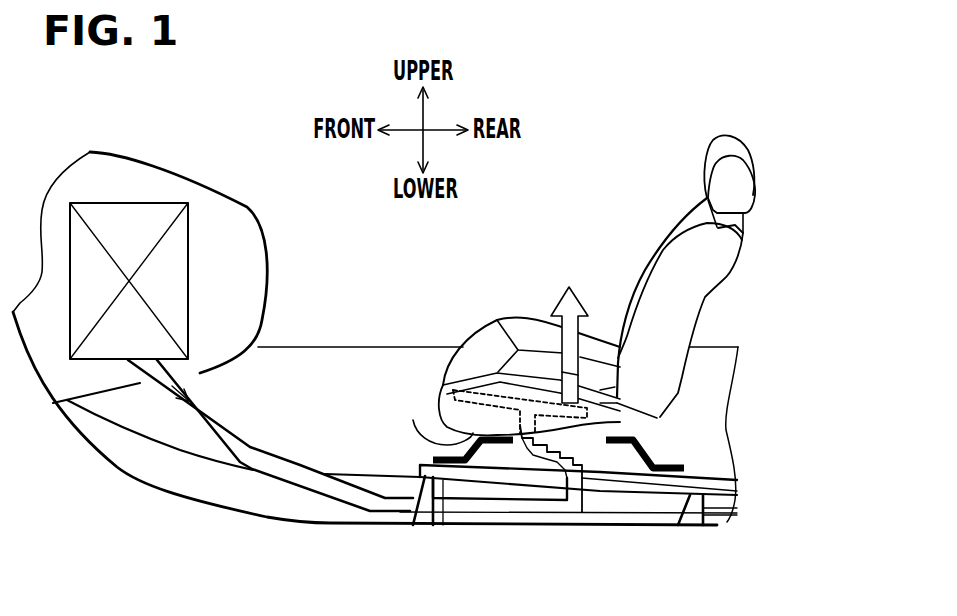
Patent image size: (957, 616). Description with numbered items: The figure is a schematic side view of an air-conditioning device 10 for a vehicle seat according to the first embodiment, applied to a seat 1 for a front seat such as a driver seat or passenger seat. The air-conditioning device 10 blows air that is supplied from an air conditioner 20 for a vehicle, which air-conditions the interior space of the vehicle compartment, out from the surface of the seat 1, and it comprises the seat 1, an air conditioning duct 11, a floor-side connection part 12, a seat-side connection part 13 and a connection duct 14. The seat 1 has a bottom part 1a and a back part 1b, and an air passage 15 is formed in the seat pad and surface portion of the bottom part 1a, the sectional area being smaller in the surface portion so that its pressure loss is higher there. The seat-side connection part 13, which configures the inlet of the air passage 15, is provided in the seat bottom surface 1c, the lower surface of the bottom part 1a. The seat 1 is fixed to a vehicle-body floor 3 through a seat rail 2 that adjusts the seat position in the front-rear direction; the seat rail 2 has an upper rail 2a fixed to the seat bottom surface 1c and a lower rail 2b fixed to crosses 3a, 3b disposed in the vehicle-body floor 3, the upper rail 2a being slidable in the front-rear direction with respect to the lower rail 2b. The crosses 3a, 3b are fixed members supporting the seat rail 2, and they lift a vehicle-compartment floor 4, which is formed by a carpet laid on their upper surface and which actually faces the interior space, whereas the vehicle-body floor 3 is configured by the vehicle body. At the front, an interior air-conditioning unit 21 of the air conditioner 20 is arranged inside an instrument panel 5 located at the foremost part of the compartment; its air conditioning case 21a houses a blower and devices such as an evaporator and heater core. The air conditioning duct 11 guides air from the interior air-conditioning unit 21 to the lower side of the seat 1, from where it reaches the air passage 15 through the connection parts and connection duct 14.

The seat 1 is at (663, 227).
The bottom part 1a is at (540, 365).
The back part 1b is at (718, 252).
The seat bottom surface 1c is at (413, 420).
The seat rail 2 is at (797, 443).
The upper rail 2a is at (633, 457).
The lower rail 2b is at (707, 508).
The vehicle-body floor 3 is at (297, 521).
The cross 3a is at (443, 492).
The cross 3b is at (727, 521).
The vehicle-compartment floor 4 is at (377, 473).
The instrument panel 5 is at (247, 207).
The air-conditioning device for a vehicle seat 10 is at (477, 325).
The air conditioning duct 11 is at (188, 418).
The floor-side connection part 12 is at (590, 497).
The seat-side connection part 13 is at (540, 434).
The connection duct 14 is at (543, 457).
The air passage 15 is at (440, 388).
The air conditioner for a vehicle 20 is at (127, 182).
The interior air-conditioning unit 21 is at (173, 203).
The air conditioning case 21a is at (129, 281).